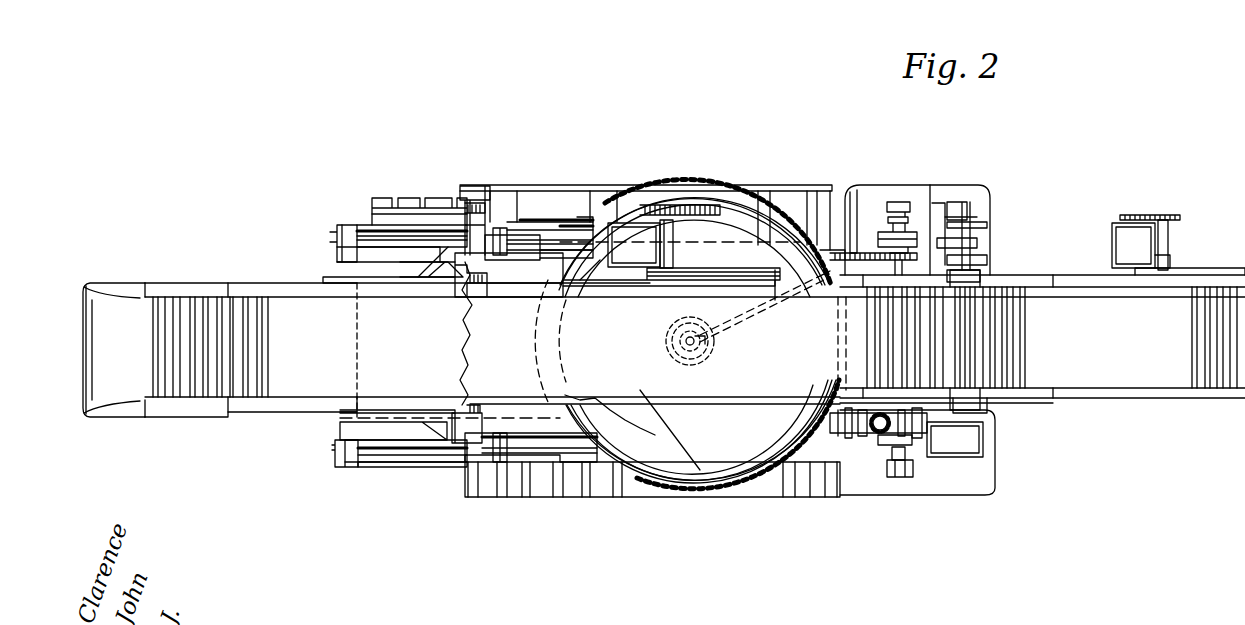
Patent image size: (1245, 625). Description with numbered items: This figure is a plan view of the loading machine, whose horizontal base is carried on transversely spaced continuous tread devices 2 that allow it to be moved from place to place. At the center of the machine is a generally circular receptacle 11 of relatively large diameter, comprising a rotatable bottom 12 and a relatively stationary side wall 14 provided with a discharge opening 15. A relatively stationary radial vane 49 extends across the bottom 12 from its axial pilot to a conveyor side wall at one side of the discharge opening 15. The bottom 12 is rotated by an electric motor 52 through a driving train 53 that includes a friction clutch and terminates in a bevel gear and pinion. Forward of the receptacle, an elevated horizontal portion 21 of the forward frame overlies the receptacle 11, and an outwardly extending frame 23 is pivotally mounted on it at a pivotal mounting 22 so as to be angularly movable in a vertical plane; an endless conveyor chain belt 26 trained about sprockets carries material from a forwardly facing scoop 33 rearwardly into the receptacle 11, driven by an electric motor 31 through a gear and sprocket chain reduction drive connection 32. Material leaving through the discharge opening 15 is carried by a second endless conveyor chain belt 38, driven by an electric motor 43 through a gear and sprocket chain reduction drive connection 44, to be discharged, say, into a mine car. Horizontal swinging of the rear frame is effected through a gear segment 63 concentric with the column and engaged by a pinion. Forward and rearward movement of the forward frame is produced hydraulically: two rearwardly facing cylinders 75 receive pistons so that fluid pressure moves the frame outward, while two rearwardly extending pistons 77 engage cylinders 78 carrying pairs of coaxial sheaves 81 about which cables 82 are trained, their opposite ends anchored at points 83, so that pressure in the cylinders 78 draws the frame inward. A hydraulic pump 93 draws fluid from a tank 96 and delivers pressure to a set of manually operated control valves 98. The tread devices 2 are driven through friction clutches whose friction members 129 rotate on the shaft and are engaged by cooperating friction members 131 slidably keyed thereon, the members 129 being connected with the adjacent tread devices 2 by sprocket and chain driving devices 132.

The continuous tread devices 2 is at (775, 190).
The receptacle 11 is at (722, 480).
The bottom 12 is at (688, 468).
The side wall 14 is at (642, 478).
The discharge opening 15 is at (825, 345).
The elevated horizontal portion 21 is at (626, 420).
The pivotal mounting 22 is at (481, 329).
The frame 23 is at (340, 445).
The endless conveyor chain belt 26 is at (245, 315).
The electric motor 31 is at (662, 240).
The gear and sprocket chain reduction drive connection 32 is at (680, 262).
The scoop 33 is at (150, 284).
The second endless conveyor chain belt 38 is at (1025, 355).
The electric motor 43 is at (1132, 232).
The gear and sprocket chain reduction drive connection 44 is at (1176, 242).
The radial vane 49 is at (725, 332).
The electric motor 52 is at (975, 440).
The driving train 53 is at (855, 437).
The gear segment 63 is at (738, 195).
The cylinders 75 is at (392, 240).
The pistons 77 is at (438, 240).
The cylinders 78 is at (578, 217).
The coaxial sheaves 81 is at (598, 230).
The cables 82 is at (545, 235).
The cable anchorage 83 is at (345, 226).
The hydraulic pump 93 is at (987, 222).
The tank 96 is at (985, 475).
The control valves 98 is at (470, 195).
The friction members 129 is at (880, 210).
The friction members 131 is at (918, 240).
The sprocket and chain driving devices 132 is at (880, 212).